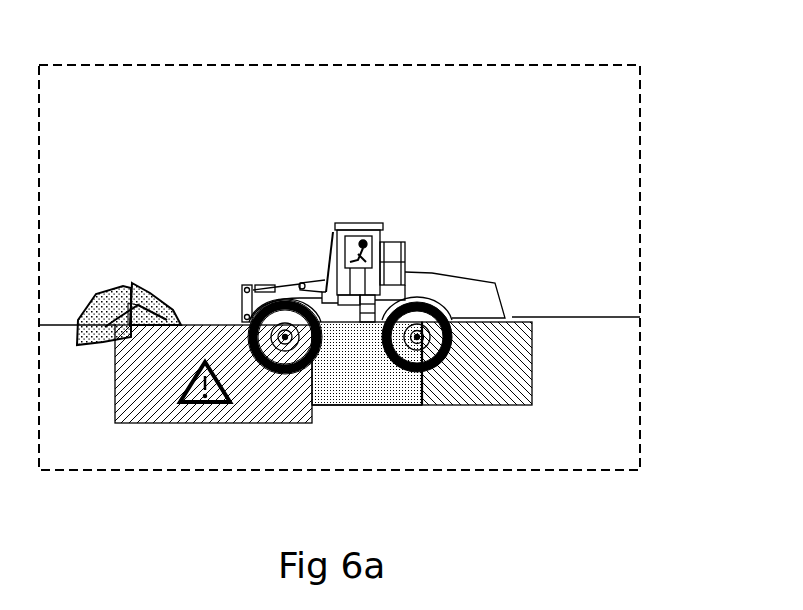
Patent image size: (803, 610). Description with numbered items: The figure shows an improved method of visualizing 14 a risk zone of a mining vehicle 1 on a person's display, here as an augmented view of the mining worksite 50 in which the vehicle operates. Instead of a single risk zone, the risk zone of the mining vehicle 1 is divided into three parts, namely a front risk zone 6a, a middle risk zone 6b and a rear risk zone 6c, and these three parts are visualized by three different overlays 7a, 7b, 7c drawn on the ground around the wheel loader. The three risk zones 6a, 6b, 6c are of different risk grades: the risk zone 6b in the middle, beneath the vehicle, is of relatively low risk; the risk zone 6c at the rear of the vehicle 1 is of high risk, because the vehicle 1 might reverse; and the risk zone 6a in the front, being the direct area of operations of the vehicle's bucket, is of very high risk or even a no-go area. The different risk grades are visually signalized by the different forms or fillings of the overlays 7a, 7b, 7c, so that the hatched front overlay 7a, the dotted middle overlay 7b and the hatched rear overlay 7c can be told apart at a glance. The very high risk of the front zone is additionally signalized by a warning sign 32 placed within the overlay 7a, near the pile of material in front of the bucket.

The visualizing 14 is at (666, 40).
The mining worksite 50 is at (117, 118).
The mining vehicle 1 is at (362, 158).
The warning sign 32 is at (206, 358).
The risk zone 6a is at (131, 434).
The risk zone 6b is at (341, 425).
The risk zone 6c is at (512, 298).
The overlay 7a is at (165, 412).
The overlay 7b is at (335, 400).
The overlay 7c is at (488, 395).